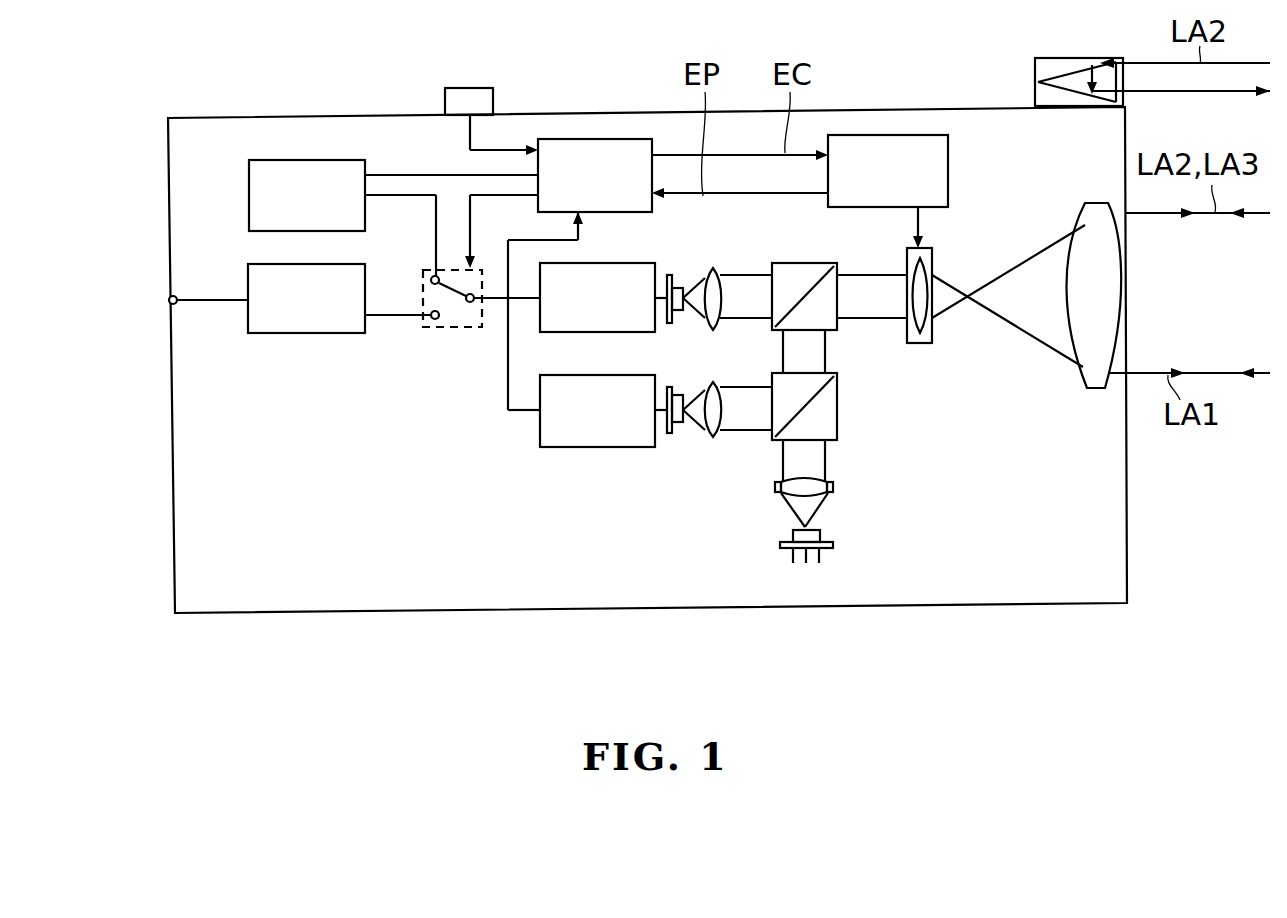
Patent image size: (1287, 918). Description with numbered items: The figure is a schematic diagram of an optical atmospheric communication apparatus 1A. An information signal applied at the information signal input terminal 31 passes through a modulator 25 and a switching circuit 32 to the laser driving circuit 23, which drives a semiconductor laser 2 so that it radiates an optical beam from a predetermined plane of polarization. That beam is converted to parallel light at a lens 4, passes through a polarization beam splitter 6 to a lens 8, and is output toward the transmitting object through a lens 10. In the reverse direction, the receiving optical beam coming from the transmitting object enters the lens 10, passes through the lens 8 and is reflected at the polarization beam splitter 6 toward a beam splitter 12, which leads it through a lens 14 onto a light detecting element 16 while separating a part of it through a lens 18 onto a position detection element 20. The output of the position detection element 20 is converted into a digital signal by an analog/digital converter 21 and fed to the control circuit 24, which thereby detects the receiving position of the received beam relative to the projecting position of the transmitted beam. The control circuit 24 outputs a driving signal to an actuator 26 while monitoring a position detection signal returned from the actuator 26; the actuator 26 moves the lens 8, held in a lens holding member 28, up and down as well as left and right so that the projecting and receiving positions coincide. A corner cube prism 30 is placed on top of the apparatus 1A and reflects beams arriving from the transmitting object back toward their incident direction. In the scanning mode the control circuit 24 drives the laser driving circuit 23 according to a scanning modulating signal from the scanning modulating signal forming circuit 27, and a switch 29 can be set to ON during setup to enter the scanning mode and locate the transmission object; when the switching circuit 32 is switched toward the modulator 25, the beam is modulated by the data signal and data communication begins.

The optical atmospheric communication apparatus 1A is at (1127, 578).
The semiconductor laser 2 is at (669, 275).
The lens 4 is at (712, 268).
The polarization beam splitter 6 is at (800, 263).
The lens 8 is at (932, 333).
The lens 10 is at (1098, 202).
The beam splitter 12 is at (837, 423).
The lens 14 is at (835, 487).
The light detecting element 16 is at (835, 545).
The lens 18 is at (714, 437).
The position detection element 20 is at (671, 433).
The analog/digital converter 21 is at (585, 447).
The laser driving circuit 23 is at (600, 332).
The control circuit 24 is at (590, 212).
The modulator 25 is at (305, 333).
The actuator 26 is at (948, 188).
The scanning modulating signal forming circuit 27 is at (249, 187).
The lens holding member 28 is at (932, 262).
The switch 29 is at (493, 90).
The corner cube prism 30 is at (1080, 58).
The information signal input terminal 31 is at (169, 301).
The switching circuit 32 is at (440, 327).